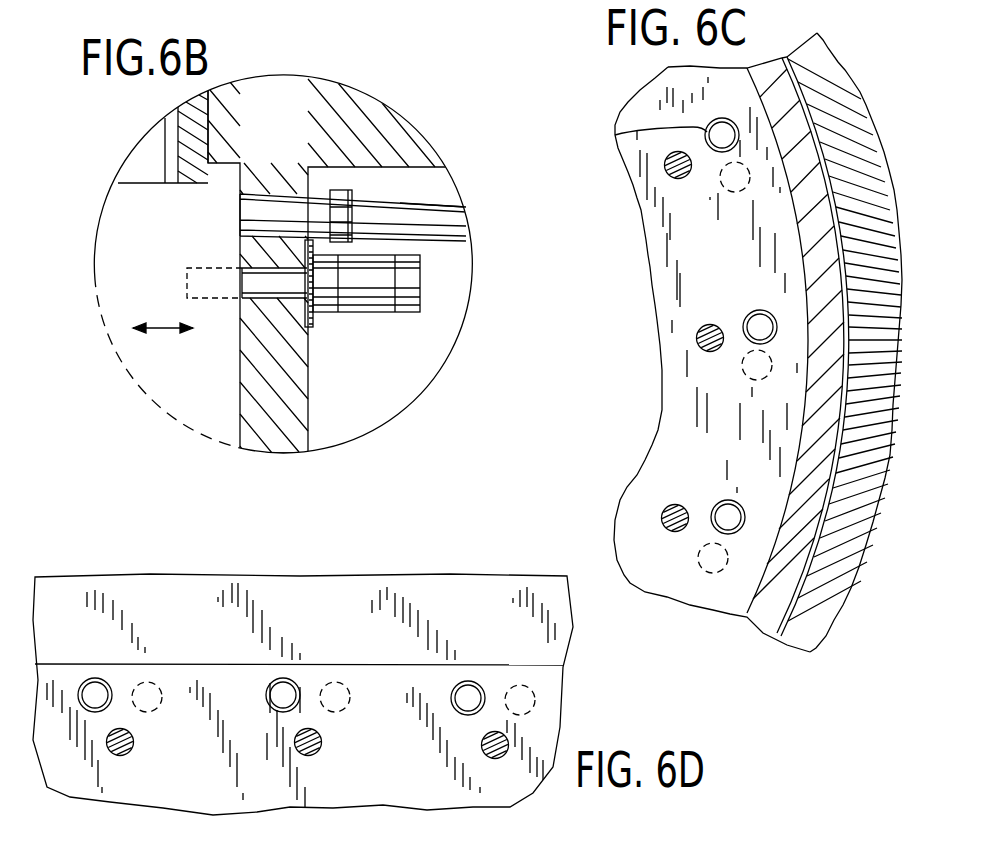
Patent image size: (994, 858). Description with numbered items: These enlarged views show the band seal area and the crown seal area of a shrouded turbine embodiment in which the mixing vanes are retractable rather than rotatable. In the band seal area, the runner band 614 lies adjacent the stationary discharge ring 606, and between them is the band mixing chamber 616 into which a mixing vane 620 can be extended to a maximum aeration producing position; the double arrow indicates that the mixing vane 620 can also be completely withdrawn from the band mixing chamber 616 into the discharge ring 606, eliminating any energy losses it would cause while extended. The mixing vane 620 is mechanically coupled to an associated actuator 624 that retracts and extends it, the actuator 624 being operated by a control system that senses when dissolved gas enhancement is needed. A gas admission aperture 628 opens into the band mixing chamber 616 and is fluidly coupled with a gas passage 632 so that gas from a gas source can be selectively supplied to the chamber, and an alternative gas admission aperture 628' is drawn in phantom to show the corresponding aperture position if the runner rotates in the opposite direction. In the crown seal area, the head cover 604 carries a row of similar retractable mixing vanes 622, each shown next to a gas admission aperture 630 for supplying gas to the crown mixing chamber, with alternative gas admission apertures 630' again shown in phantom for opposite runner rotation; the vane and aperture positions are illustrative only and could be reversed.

In FIG. 6C, the head cover 604 is at (657, 322).
In FIG. 6B, the discharge ring 606 is at (308, 405).
In FIG. 6D, the discharge ring 606 is at (323, 813).
In FIG. 6B, the band 614 is at (153, 184).
In FIG. 6B, the band mixing chamber 616 is at (210, 401).
In FIG. 6B, the mixing vane 620 is at (242, 290).
In FIG. 6D, the mixing vane 620 is at (129, 752).
In FIG. 6C, the mixing vane 622 is at (672, 183).
In FIG. 6B, the actuator 624 is at (380, 313).
In FIG. 6B, the gas admission aperture 628 is at (323, 223).
In FIG. 6D, the gas admission aperture 628 is at (266, 655).
In FIG. 6D, the alternative gas admission aperture 628' is at (333, 669).
In FIG. 6C, the gas admission aperture 630 is at (665, 323).
In FIG. 6C, the alternative gas admission aperture 630' is at (697, 367).
In FIG. 6B, the gas passage 632 is at (444, 205).